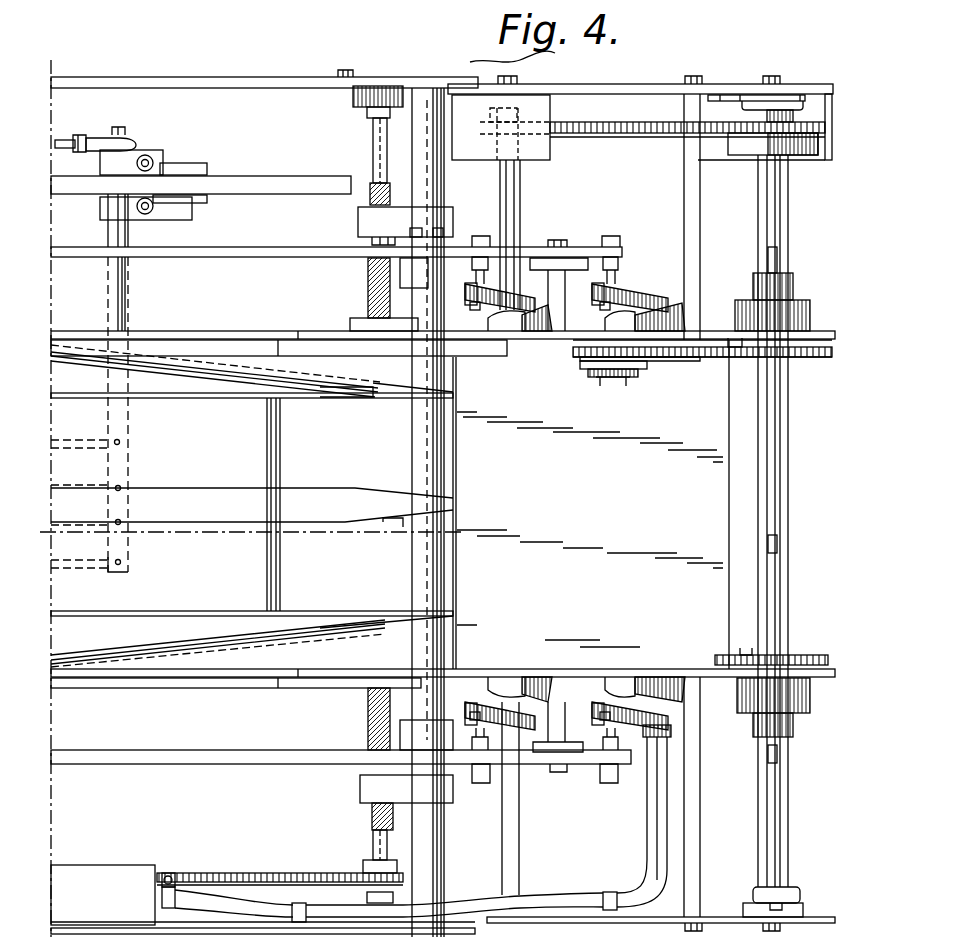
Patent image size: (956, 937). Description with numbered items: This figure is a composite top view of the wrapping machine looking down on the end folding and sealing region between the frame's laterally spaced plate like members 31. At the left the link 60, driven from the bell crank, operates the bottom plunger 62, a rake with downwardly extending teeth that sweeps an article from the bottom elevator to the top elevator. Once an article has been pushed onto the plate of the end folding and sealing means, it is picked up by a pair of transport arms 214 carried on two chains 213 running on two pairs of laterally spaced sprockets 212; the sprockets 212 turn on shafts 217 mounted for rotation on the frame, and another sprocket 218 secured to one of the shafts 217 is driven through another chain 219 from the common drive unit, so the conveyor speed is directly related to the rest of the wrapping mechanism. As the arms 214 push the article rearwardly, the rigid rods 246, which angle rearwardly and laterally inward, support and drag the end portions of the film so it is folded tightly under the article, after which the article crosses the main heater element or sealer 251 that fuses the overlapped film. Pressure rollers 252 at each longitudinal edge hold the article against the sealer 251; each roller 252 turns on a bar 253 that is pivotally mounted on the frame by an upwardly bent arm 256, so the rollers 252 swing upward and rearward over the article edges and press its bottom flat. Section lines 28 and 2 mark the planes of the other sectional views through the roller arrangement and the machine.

The plate like members 31 is at (255, 80).
The link 60 is at (60, 137).
The bottom plunger 62 is at (120, 433).
The rigid rod 246 is at (345, 384).
The section line 28 is at (358, 404).
The section line 2 is at (427, 470).
The main heater element or sealer 251 is at (630, 517).
The roller 252 is at (688, 306).
The bar 253 is at (635, 296).
The arm 256 is at (625, 236).
The sprockets 212 is at (840, 347).
The chains 213 is at (706, 358).
The transport arms 214 is at (610, 383).
The shafts 217 is at (787, 837).
The sprocket 218 is at (798, 150).
The chain 219 is at (657, 140).